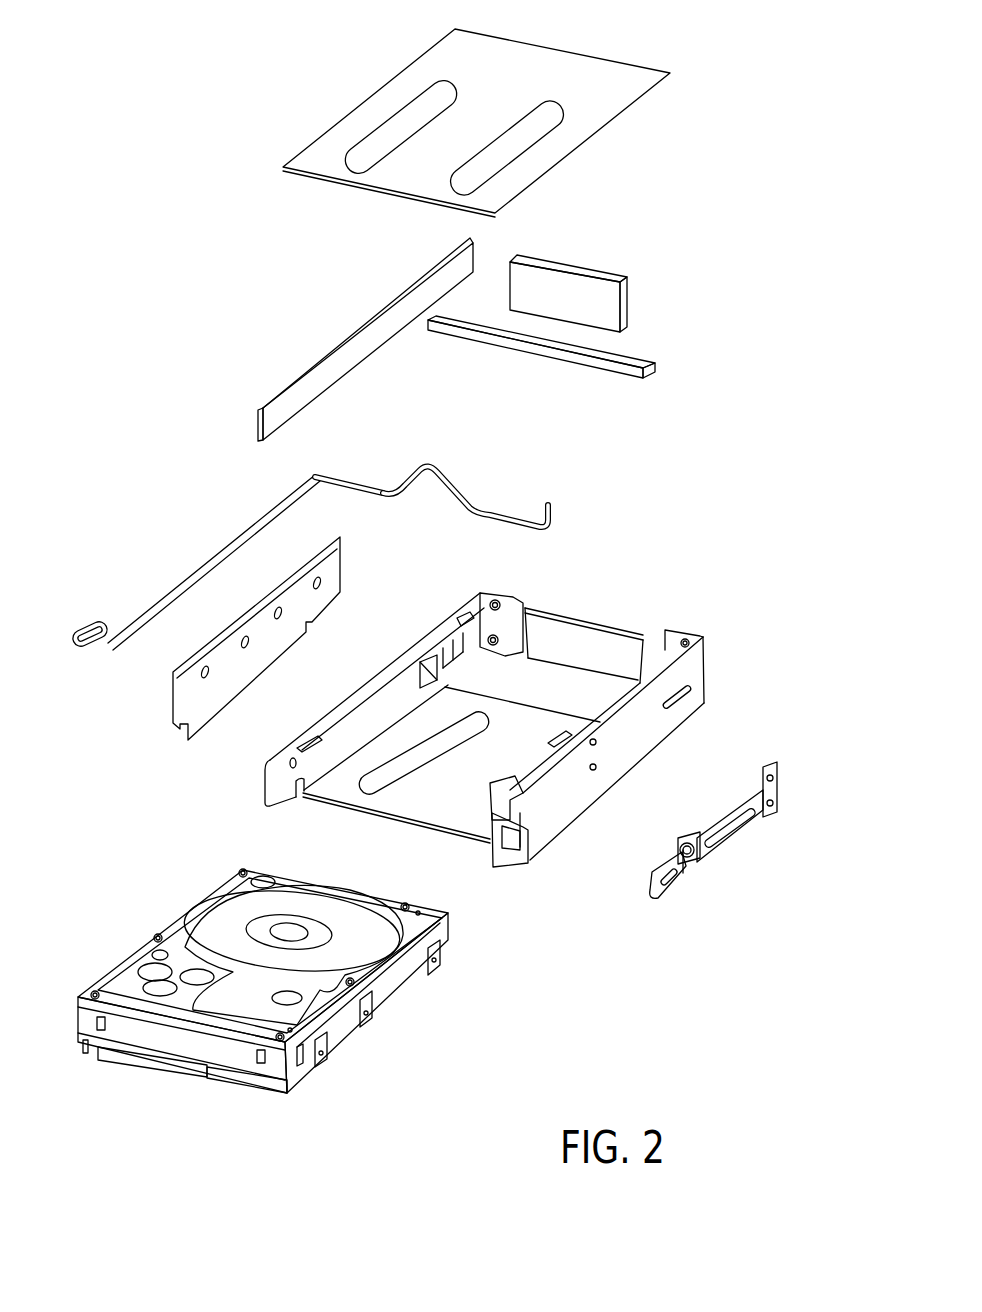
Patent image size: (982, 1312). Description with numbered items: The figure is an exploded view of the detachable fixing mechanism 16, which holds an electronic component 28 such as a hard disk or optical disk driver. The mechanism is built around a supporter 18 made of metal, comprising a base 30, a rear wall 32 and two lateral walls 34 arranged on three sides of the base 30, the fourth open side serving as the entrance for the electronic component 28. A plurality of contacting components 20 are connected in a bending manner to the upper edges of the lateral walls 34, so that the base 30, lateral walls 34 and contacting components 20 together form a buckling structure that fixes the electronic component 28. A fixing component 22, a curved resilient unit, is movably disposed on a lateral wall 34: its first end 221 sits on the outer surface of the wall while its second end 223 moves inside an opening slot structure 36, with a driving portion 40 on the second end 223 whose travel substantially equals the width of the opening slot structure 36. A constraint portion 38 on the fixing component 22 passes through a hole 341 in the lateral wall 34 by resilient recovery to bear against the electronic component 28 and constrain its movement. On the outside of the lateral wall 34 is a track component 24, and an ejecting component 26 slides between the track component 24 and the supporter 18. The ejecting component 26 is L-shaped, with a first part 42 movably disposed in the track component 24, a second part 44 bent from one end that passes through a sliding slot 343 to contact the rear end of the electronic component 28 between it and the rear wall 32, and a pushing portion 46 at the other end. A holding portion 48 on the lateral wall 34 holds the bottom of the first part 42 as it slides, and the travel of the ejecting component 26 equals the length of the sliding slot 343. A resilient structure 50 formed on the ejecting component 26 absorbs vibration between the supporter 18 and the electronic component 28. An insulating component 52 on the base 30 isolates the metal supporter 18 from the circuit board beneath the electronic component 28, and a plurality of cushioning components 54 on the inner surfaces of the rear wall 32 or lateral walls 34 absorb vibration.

The detachable fixing mechanism 16 is at (682, 212).
The supporter 18 is at (642, 570).
The contacting components 20 is at (457, 620).
The fixing component 22 is at (785, 957).
The track component 24 is at (187, 697).
The ejecting component 26 is at (90, 457).
The electronic component 28 is at (403, 997).
The base 30 is at (433, 799).
The rear wall 32 is at (578, 643).
The lateral walls 34 is at (313, 770).
The opening slot structure 36 is at (458, 845).
The constraint portion 38 is at (688, 845).
The driving portion 40 is at (660, 929).
The first part 42 is at (177, 587).
The second part 44 is at (350, 485).
The pushing portion 46 is at (92, 620).
The holding portion 48 is at (437, 667).
The resilient structure 50 is at (438, 470).
The insulating component 52 is at (593, 70).
The cushioning components 54 is at (360, 340).
The first end 221 is at (768, 820).
The second end 223 is at (670, 880).
The hole 341 is at (506, 810).
The sliding slot 343 is at (440, 660).